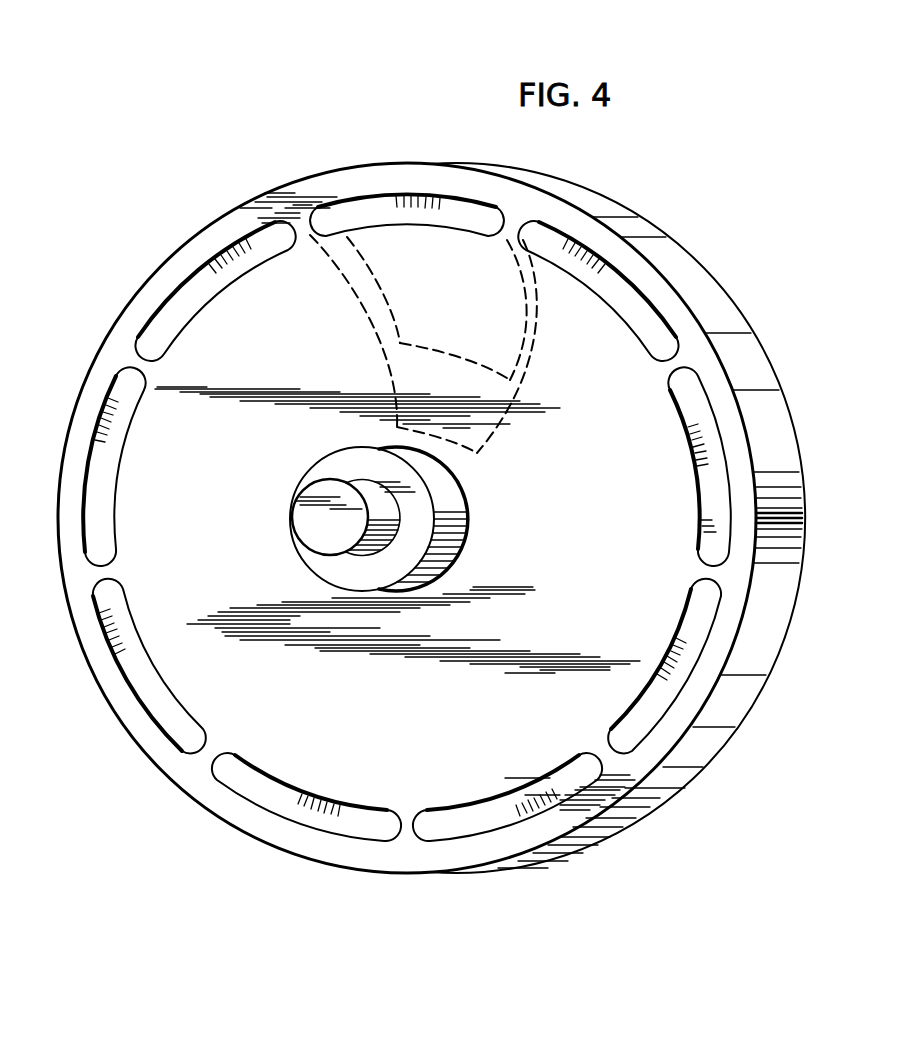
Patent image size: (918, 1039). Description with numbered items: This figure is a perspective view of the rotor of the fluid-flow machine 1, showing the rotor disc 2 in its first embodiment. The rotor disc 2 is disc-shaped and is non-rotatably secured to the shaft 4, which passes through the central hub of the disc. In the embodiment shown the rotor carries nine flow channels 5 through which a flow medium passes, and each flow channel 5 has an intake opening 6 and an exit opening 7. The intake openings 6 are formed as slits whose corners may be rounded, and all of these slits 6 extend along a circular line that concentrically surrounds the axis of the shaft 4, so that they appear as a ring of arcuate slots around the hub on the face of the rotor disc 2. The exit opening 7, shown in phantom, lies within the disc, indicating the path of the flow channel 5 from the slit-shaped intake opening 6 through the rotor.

The fluid-flow machine 1 is at (408, 162).
The rotor disc 2 is at (691, 290).
The shaft 4 is at (455, 503).
The flow channel 5 is at (264, 790).
The intake opening 6 is at (363, 210).
The exit opening 7 is at (452, 391).